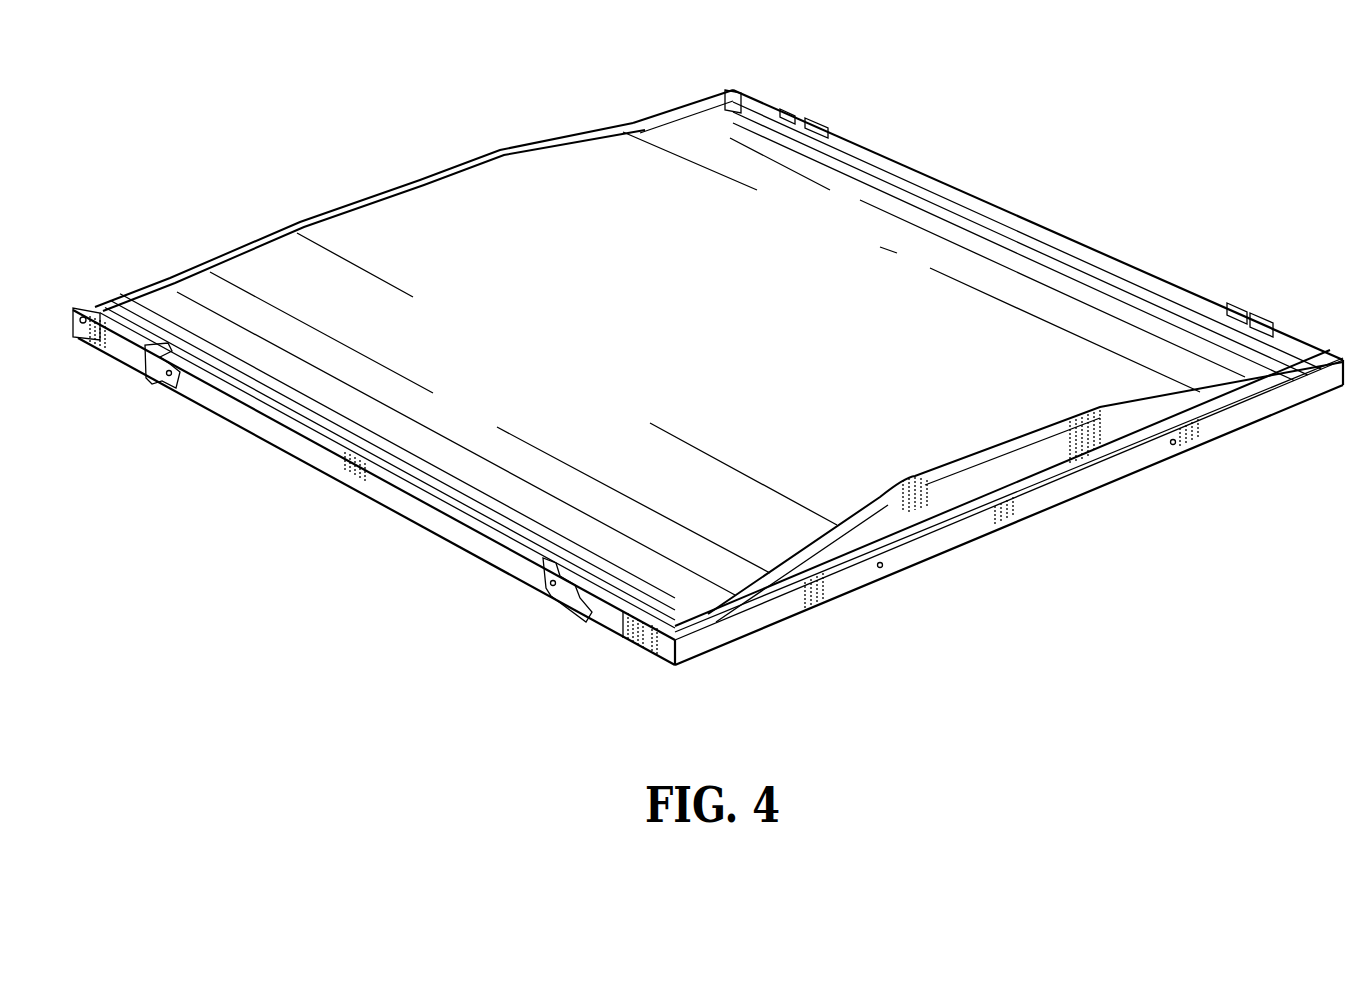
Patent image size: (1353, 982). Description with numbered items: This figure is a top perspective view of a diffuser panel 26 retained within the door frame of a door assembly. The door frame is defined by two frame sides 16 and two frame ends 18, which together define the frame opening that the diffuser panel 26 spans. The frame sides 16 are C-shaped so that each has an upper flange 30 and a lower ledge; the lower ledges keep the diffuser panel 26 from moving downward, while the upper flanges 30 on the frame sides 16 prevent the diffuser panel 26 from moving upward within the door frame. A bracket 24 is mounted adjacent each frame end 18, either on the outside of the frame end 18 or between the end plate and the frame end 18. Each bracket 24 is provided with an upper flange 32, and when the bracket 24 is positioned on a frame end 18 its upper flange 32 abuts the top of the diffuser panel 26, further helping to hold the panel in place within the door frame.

The frame side 16 is at (890, 160).
The frame end 18 is at (1203, 445).
The bracket 24 is at (1030, 462).
The diffuser panel 26 is at (719, 320).
The upper flange 30 is at (1177, 287).
The upper flange 32 is at (413, 180).